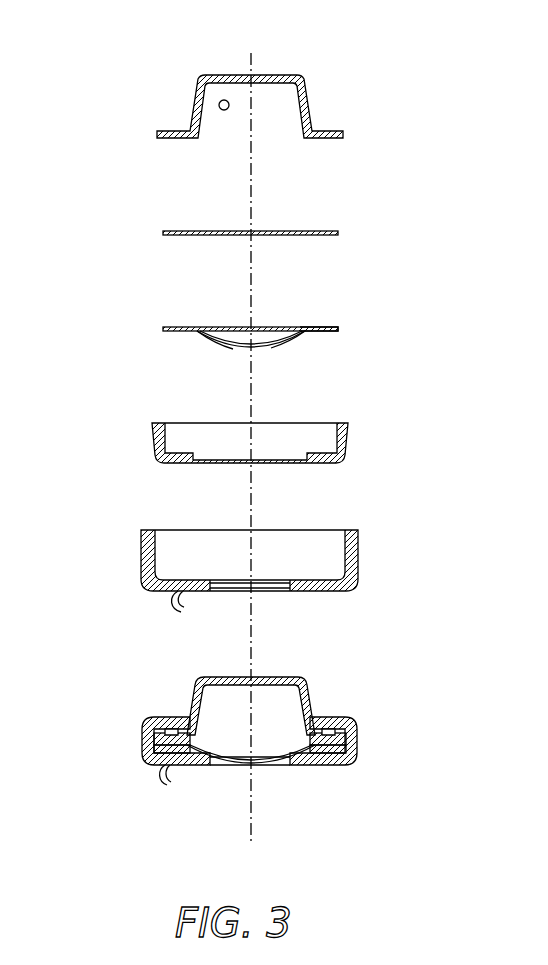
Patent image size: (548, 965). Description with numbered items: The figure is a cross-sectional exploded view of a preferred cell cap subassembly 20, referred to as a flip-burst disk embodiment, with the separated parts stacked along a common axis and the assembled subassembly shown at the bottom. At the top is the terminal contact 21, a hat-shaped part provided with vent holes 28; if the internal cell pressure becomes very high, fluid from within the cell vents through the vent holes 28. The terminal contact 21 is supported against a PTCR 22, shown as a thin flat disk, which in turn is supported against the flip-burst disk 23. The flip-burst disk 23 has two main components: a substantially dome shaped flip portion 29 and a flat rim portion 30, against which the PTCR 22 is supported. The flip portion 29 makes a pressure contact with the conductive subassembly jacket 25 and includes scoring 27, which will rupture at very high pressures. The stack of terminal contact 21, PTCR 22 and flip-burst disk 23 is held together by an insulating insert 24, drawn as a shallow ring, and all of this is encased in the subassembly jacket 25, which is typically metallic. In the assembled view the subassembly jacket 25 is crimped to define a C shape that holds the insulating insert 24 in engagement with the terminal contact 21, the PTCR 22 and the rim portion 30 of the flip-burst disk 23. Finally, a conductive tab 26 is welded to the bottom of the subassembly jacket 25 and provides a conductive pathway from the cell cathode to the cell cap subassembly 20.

The cell cap subassembly 20 is at (322, 680).
The terminal contact 21 is at (225, 75).
The PTCR 22 is at (180, 231).
The flip-burst disk 23 is at (229, 340).
The insulating insert 24 is at (348, 443).
The subassembly jacket 25 is at (138, 556).
The conductive tab 26 is at (172, 607).
The scoring 27 is at (280, 341).
The vent holes 28 is at (219, 103).
The flip portion 29 is at (207, 337).
The rim portion 30 is at (325, 326).